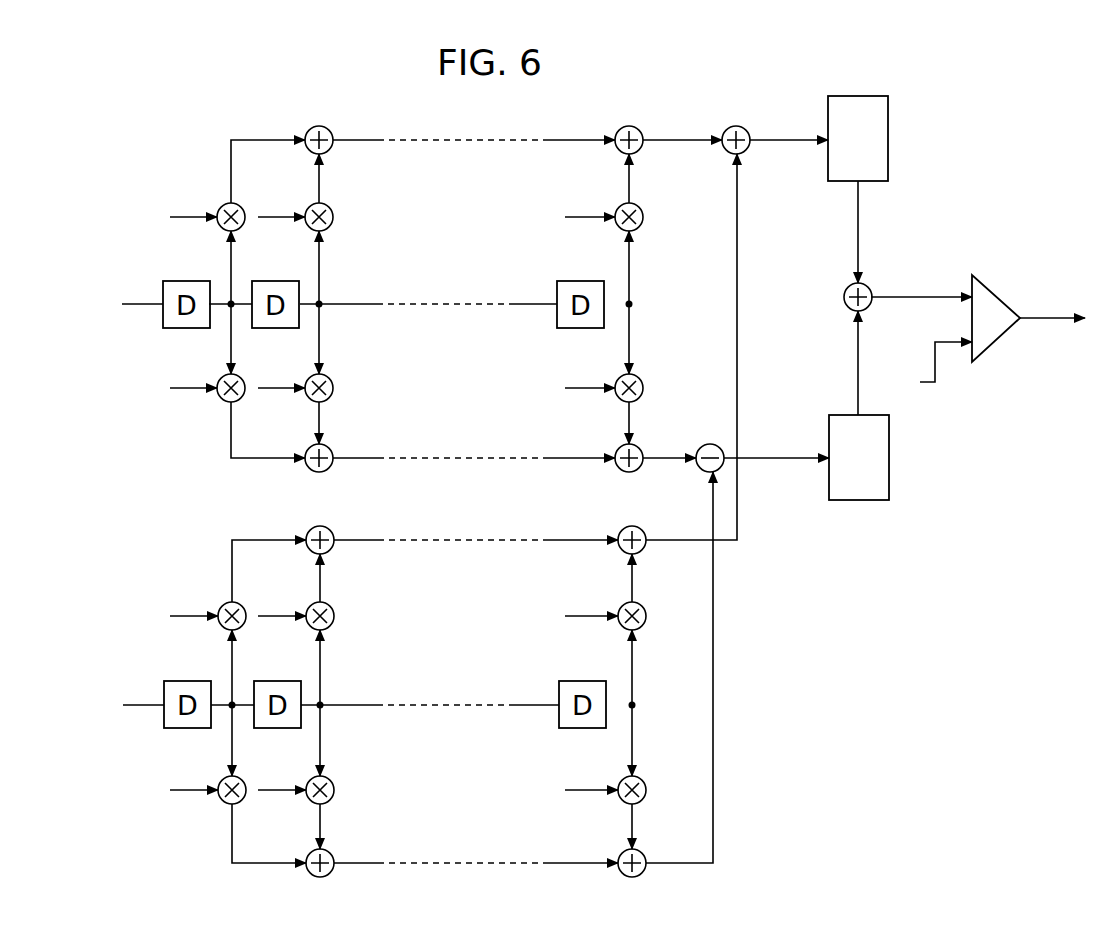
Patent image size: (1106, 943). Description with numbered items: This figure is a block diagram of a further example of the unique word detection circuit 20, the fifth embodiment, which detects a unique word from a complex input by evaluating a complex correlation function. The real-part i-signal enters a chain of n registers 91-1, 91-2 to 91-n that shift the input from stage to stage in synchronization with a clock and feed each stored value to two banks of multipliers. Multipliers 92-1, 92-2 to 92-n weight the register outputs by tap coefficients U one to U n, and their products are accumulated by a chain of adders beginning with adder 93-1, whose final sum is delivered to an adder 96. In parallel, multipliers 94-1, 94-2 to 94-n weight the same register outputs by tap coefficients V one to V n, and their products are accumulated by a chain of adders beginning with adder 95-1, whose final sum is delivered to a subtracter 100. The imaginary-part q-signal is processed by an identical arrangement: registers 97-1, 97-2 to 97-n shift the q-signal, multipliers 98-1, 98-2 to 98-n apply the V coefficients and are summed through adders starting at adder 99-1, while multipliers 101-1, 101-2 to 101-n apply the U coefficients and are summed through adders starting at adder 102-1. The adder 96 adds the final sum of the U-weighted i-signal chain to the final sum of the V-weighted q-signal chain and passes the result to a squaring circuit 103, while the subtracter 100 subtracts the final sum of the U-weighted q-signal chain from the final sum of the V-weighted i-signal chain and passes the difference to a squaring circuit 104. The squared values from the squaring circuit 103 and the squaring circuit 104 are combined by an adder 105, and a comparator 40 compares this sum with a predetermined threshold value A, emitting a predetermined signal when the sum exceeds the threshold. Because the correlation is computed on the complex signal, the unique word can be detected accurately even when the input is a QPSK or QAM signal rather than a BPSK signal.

The unique word detection circuit 20 is at (807, 655).
The comparator 40 is at (993, 290).
The register 91-1 is at (186, 281).
The register 91-2 is at (276, 281).
The register 91-n is at (577, 281).
The multiplier 92-1 is at (220, 208).
The multiplier 92-2 is at (334, 215).
The multiplier 92-n is at (672, 192).
The adder 93-1 is at (304, 135).
The multiplier 94-1 is at (226, 400).
The multiplier 94-2 is at (334, 386).
The multiplier 94-n is at (673, 365).
The adder 95-1 is at (334, 453).
The adder 96 is at (747, 150).
The register 97-1 is at (186, 681).
The register 97-2 is at (276, 681).
The register 97-n is at (577, 681).
The multiplier 98-1 is at (221, 607).
The multiplier 98-2 is at (334, 614).
The multiplier 98-n is at (620, 604).
The adder 99-1 is at (334, 538).
The subtracter 100 is at (709, 445).
The multiplier 101-1 is at (226, 803).
The multiplier 101-2 is at (335, 788).
The multiplier 101-n is at (620, 778).
The adder 102-1 is at (335, 858).
The squaring circuit 103 is at (888, 118).
The squaring circuit 104 is at (890, 484).
The adder 105 is at (868, 287).